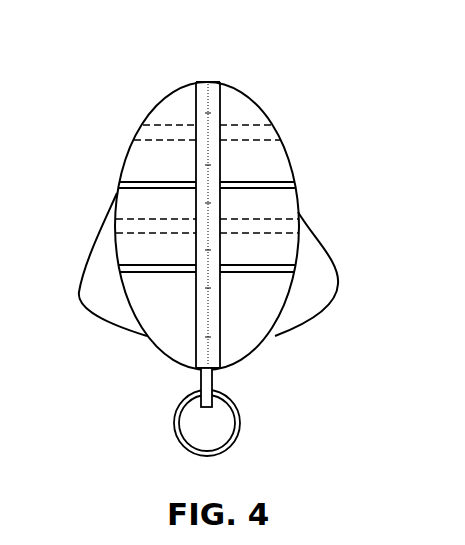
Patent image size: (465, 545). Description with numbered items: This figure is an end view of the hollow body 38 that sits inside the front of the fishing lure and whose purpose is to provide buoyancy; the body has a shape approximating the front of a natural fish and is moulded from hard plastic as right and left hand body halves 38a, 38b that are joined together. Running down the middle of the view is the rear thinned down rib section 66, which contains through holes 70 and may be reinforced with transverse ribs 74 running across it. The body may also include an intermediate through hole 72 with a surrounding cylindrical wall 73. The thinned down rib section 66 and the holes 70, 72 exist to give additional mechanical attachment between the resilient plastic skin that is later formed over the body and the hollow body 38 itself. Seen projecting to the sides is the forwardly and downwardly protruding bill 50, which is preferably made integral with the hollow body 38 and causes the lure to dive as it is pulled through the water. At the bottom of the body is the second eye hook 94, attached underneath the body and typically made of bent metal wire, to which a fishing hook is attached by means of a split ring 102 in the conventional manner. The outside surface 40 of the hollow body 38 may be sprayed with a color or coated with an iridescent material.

The hollow body 38 is at (340, 155).
The right hand body half 38a is at (128, 148).
The left hand body half 38b is at (224, 82).
The rear thinned down rib section 66 is at (221, 98).
The through holes 70 is at (220, 147).
The cylindrical wall 73 is at (268, 133).
The transverse ribs 74 is at (120, 181).
The intermediate through hole 72 is at (118, 194).
The outside surface 40 is at (147, 338).
The bill 50 is at (325, 286).
The second eye hook 94 is at (213, 376).
The split ring 102 is at (240, 420).